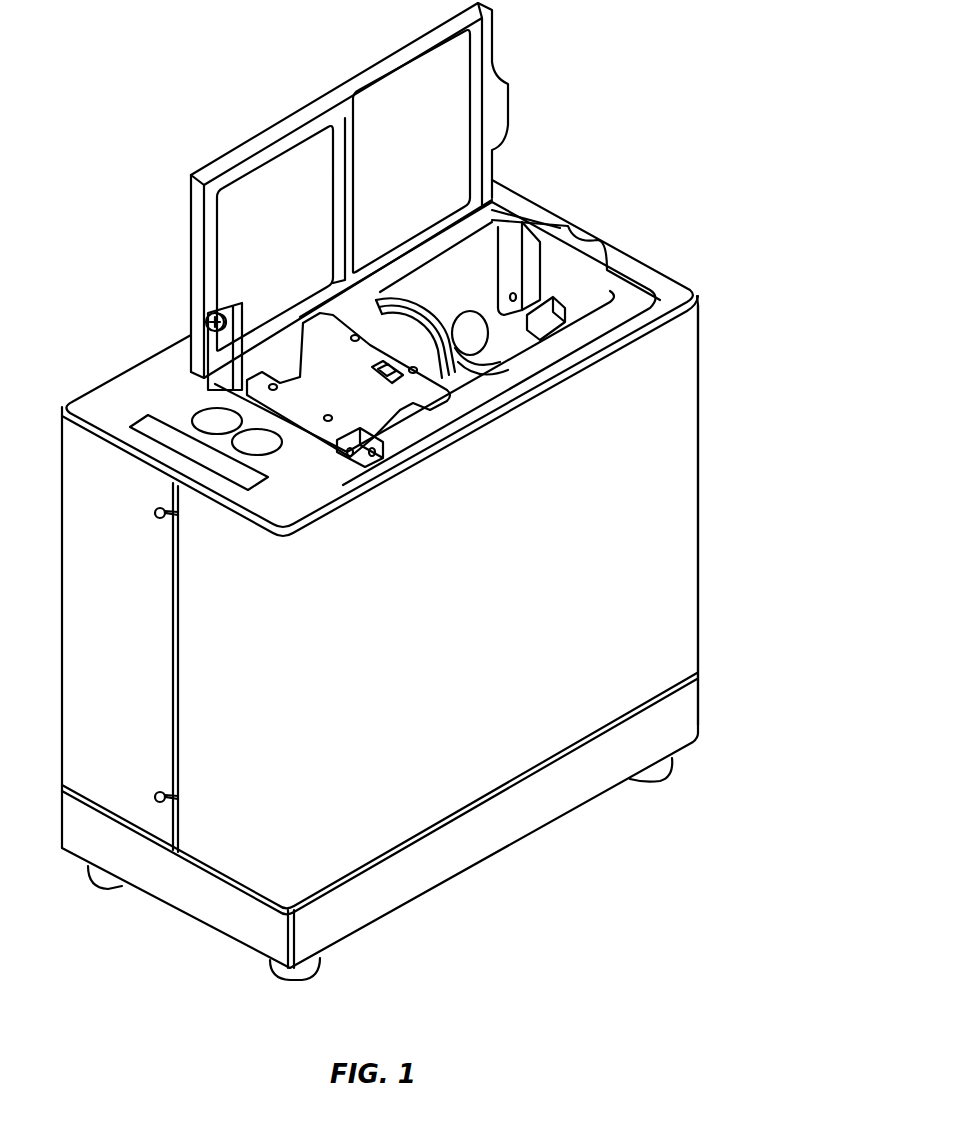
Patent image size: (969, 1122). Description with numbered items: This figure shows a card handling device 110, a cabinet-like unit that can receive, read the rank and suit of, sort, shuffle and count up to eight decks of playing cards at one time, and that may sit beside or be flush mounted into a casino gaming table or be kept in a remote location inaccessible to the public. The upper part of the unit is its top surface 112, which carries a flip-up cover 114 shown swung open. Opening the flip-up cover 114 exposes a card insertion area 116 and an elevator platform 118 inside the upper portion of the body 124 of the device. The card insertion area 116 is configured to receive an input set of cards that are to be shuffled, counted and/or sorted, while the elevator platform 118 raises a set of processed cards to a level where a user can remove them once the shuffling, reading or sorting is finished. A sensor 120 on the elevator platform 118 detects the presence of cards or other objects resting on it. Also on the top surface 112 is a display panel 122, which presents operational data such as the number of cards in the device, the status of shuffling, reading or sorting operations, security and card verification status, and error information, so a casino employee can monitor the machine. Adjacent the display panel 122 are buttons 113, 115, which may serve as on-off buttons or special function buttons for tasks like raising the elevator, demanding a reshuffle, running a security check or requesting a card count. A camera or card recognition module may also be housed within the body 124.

The card handling device 110 is at (598, 822).
The top surface 112 is at (178, 372).
The button 113 is at (278, 452).
The flip-up cover 114 is at (512, 103).
The button 115 is at (196, 408).
The card insertion area 116 is at (580, 298).
The elevator platform 118 is at (415, 400).
The sensor 120 is at (372, 376).
The display panel 122 is at (266, 480).
The body 124 is at (700, 517).